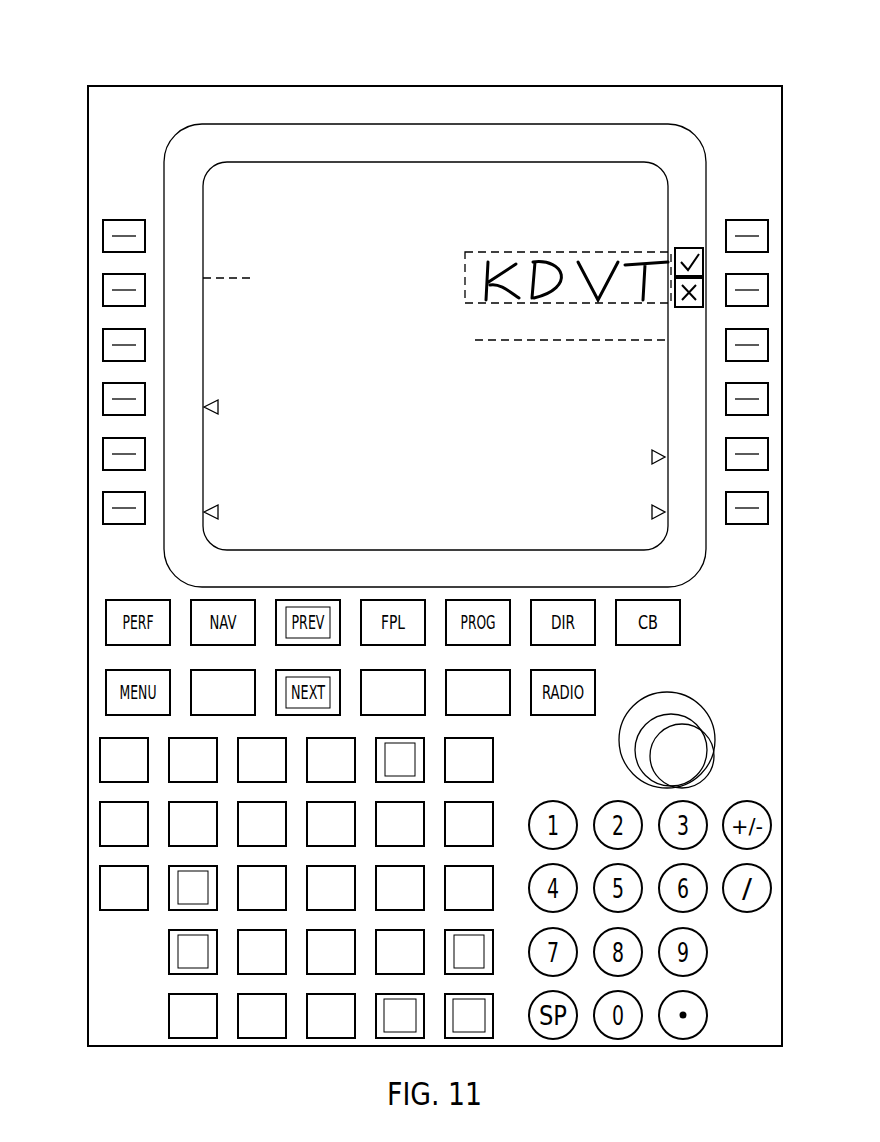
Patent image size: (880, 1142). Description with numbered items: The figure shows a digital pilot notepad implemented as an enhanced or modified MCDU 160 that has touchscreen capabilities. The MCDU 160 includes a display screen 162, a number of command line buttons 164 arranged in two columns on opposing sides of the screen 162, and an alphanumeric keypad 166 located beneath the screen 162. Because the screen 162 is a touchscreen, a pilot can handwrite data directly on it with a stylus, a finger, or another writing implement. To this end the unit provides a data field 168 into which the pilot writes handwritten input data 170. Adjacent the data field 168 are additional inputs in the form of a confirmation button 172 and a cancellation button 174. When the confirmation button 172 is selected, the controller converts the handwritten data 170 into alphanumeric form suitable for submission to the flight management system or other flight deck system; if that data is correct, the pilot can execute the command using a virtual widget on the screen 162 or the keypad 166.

The enhanced MCDU 160 is at (141, 86).
The display screen 162 is at (453, 542).
The command line buttons 164 is at (104, 212).
The alphanumeric keypad 166 is at (104, 893).
The data field 168 is at (480, 278).
The handwritten input data 170 is at (476, 291).
The confirmation button 172 is at (688, 249).
The cancellation button 174 is at (688, 307).